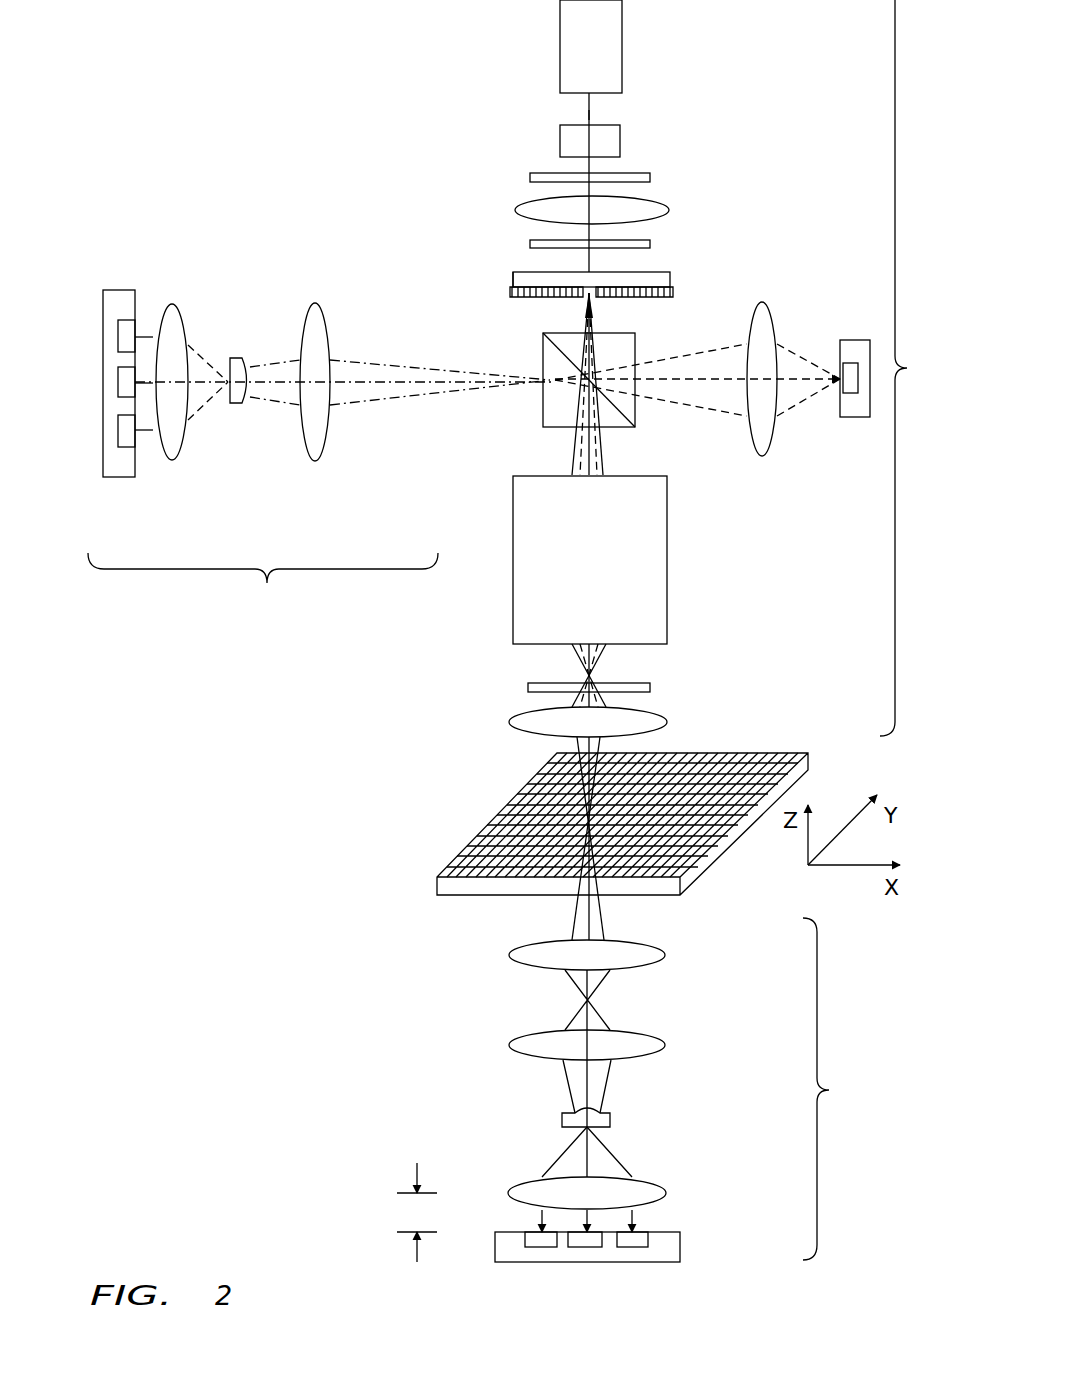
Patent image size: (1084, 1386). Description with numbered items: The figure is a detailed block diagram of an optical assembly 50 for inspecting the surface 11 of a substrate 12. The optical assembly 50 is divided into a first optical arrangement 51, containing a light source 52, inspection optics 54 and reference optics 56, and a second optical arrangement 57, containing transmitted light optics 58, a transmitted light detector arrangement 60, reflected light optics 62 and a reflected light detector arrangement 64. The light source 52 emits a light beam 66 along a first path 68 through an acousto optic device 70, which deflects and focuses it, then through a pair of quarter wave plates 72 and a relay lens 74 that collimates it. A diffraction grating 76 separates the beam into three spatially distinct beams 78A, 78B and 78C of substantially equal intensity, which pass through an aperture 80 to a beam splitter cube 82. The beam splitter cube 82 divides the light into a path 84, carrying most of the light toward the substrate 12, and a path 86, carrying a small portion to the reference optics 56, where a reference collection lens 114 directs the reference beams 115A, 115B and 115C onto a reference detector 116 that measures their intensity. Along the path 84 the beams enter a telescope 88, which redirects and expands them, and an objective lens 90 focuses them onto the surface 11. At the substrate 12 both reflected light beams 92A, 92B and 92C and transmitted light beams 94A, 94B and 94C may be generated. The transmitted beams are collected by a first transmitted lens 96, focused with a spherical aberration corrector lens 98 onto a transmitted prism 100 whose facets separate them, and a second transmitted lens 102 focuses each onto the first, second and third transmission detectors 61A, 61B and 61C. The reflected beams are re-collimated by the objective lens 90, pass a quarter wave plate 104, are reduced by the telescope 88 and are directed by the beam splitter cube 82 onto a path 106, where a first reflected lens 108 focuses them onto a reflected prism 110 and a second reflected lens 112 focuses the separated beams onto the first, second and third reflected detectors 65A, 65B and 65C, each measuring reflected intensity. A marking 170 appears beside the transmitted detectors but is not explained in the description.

The surface 11 is at (808, 753).
The substrate 12 is at (810, 757).
The optical assembly 50 is at (315, 105).
The first optical arrangement 51 is at (895, 555).
The light source 52 is at (622, 42).
The inspection optics 54 is at (483, 190).
The reference optics 56 is at (805, 285).
The second optical arrangement 57 is at (481, 906).
The transmitted light optics 58 is at (435, 1065).
The transmitted light detector arrangement 60 is at (680, 1250).
The first transmission detector 61A is at (640, 1238).
The second transmission detector 61B is at (580, 1240).
The third transmission detector 61C is at (545, 1240).
The reflected light optics 62 is at (330, 285).
The reflected light detector arrangement 64 is at (122, 478).
The first reflected detector 65A is at (125, 330).
The second reflected detector 65B is at (127, 375).
The third reflected detector 65C is at (130, 442).
The light beam 66 is at (592, 110).
The first path 68 is at (588, 118).
The acousto optic device 70 is at (620, 145).
The quarter wave plates 72 is at (650, 178).
The relay lens 74 is at (668, 210).
The diffraction grating 76 is at (512, 282).
The light beam 78A is at (603, 453).
The light beam 78B is at (578, 450).
The light beam 78C is at (572, 436).
The aperture 80 is at (673, 293).
The beam splitter cube 82 is at (543, 352).
The path 84 is at (600, 432).
The path 86 is at (653, 380).
The telescope 88 is at (667, 617).
The objective lens 90 is at (668, 722).
The reflected light beam 92A is at (605, 657).
The reflected light beam 92B is at (575, 655).
The reflected light beam 92C is at (578, 685).
The transmitted light beam 94A is at (602, 935).
The transmitted light beam 94B is at (592, 918).
The transmitted light beam 94C is at (573, 925).
The first transmitted lens 96 is at (665, 955).
The spherical aberration corrector lens 98 is at (665, 1045).
The transmitted prism 100 is at (610, 1120).
The second transmitted lens 102 is at (660, 1193).
The quarter wave plate 104 is at (650, 688).
The path 106 is at (385, 383).
The first reflected lens 108 is at (315, 460).
The reflected prism 110 is at (237, 405).
The second reflected lens 112 is at (172, 460).
The reference collection lens 114 is at (770, 445).
The reference beam 115A is at (703, 347).
The reference beam 115B is at (730, 387).
The reference beam 115C is at (745, 420).
The reference detector 116 is at (848, 340).
The scan dimension 170 is at (423, 1212).